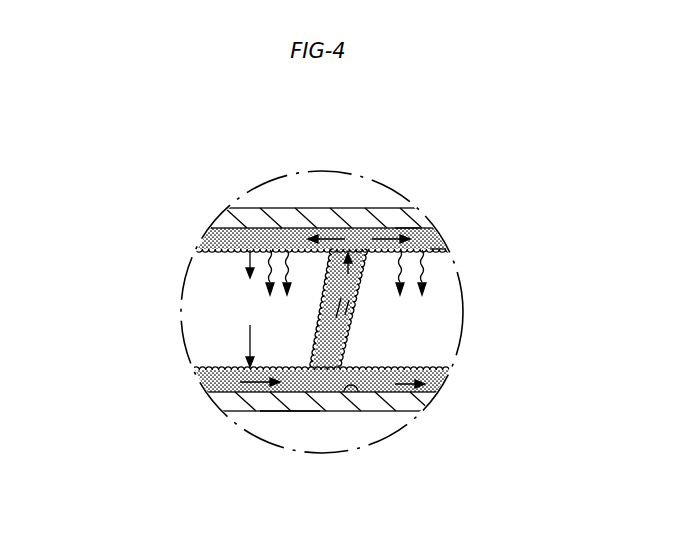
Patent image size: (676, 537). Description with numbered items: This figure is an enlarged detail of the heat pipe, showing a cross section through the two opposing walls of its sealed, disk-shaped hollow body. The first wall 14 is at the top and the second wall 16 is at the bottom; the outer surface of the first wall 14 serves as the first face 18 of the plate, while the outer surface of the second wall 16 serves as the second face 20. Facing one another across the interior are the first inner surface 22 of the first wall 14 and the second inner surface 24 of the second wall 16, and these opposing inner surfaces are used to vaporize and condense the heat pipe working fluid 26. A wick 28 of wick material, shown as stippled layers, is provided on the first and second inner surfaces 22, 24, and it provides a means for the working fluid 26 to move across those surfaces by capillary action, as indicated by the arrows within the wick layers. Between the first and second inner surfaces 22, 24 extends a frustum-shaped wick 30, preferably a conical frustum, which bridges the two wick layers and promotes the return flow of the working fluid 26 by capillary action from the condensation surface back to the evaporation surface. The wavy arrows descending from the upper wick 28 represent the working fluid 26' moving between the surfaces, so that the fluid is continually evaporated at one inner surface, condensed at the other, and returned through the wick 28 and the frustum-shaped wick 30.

The first wall 14 is at (435, 258).
The second wall 16 is at (420, 405).
The first face 18 is at (283, 202).
The second face 20 is at (286, 416).
The first inner surface 22 is at (416, 224).
The second inner surface 24 is at (350, 395).
The heat pipe working fluid 26 is at (325, 309).
The heat pipe working fluid 26' is at (324, 294).
The wick 28 is at (200, 243).
The frustum-shaped wick 30 is at (357, 290).